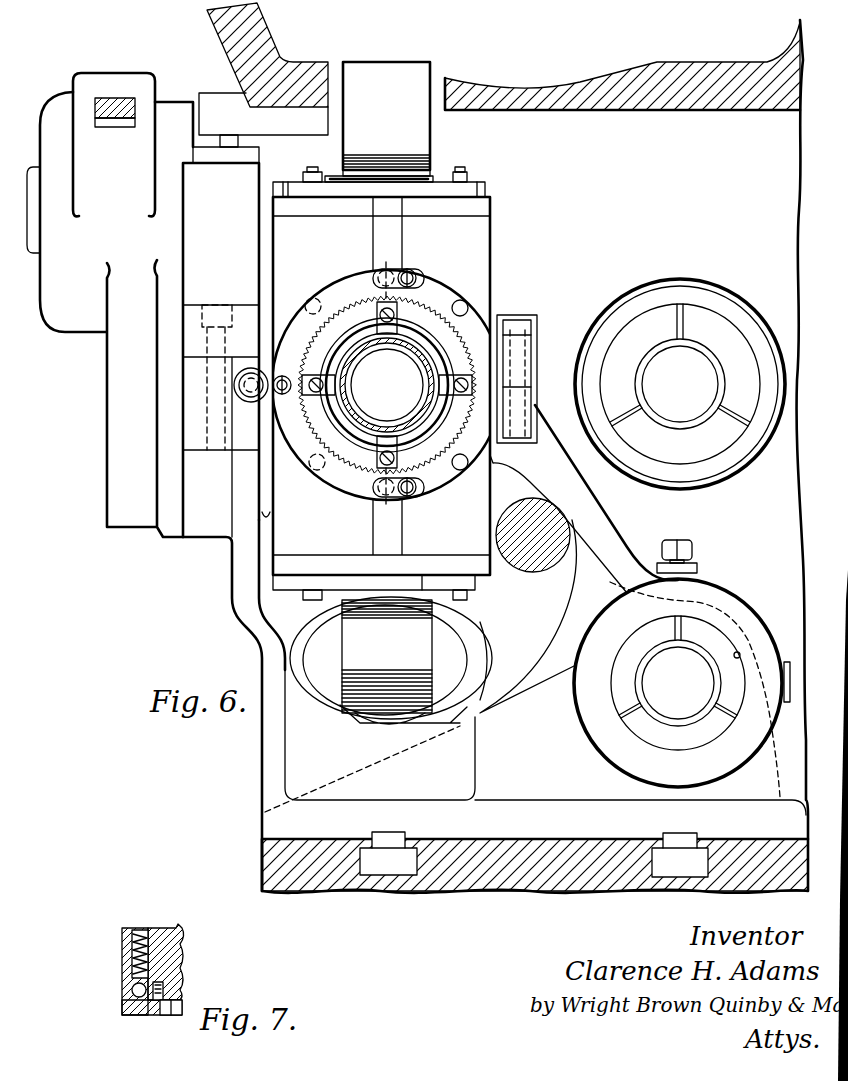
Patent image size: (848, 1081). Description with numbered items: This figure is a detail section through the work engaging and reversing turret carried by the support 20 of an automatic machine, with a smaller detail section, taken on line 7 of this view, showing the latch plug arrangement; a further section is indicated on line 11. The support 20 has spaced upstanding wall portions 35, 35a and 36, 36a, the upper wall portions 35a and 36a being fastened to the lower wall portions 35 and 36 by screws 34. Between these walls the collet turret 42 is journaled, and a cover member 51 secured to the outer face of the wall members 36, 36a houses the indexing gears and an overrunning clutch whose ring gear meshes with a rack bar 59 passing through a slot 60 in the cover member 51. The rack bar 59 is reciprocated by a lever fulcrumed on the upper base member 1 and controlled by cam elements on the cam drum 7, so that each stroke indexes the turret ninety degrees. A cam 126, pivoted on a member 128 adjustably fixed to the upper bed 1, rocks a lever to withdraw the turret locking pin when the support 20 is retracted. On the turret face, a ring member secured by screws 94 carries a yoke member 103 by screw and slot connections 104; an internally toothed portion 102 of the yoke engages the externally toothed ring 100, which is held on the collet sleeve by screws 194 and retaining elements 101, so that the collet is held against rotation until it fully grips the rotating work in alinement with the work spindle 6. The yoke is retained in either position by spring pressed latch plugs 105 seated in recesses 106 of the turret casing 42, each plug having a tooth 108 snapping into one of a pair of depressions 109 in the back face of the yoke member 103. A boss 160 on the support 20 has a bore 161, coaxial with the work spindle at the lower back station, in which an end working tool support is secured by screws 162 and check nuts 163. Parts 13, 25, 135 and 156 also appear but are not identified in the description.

In FIG. 6, the upper base member 1 is at (562, 92).
In FIG. 6, the work spindle 6 is at (716, 472).
In FIG. 6, the cam drum 7 is at (432, 275).
In FIG. 6, the section line 11— 11 is at (386, 135).
In FIG. 6, the spindle 13 is at (305, 293).
In FIG. 6, the support 20 is at (568, 878).
In FIG. 6, the shaft 25 is at (706, 355).
In FIG. 6, the screws 34 is at (216, 310).
In FIG. 6, the wall portion 35 is at (572, 492).
In FIG. 6, the upper wall portion 35a is at (525, 312).
In FIG. 6, the wall portion 36 is at (222, 540).
In FIG. 6, the upper wall portion 36a is at (250, 195).
In FIG. 6, the turret 42 is at (492, 230).
In FIG. 7, the turret 42 is at (174, 928).
In FIG. 6, the cover member 51 is at (70, 320).
In FIG. 6, the rack bar 59 is at (118, 97).
In FIG. 6, the slot 60 is at (93, 120).
In FIG. 6, the screws 94 is at (312, 298).
In FIG. 6, the externally toothed ring 100 is at (466, 300).
In FIG. 6, the retaining elements 101 is at (460, 362).
In FIG. 6, the internally toothed portion 102 is at (310, 462).
In FIG. 6, the yoke member 103 is at (330, 292).
In FIG. 7, the yoke member 103 is at (124, 1012).
In FIG. 6, the screw and slot connections 104 is at (448, 282).
In FIG. 7, the screw and slot connections 104 is at (168, 1018).
In FIG. 6, the spring pressed latch plugs 105 is at (388, 272).
In FIG. 7, the spring pressed latch plugs 105 is at (132, 976).
In FIG. 7, the recesses 106 is at (130, 934).
In FIG. 7, the tooth 108 is at (126, 990).
In FIG. 7, the depressions 109 is at (135, 1016).
In FIG. 6, the cam 126 is at (233, 140).
In FIG. 6, the member 128 is at (225, 105).
In FIG. 6, the screw 135 is at (250, 368).
In FIG. 6, the adjusting screw 156 is at (278, 396).
In FIG. 6, the boss 160 is at (745, 610).
In FIG. 6, the bore 161 is at (740, 652).
In FIG. 6, the screws 162 is at (696, 550).
In FIG. 6, the check nuts 163 is at (700, 568).
In FIG. 6, the screws 194 is at (342, 372).